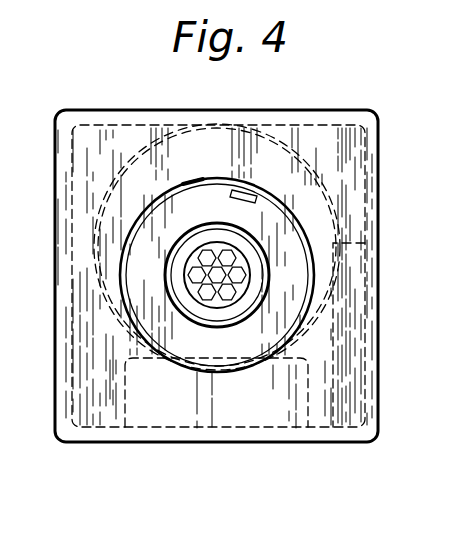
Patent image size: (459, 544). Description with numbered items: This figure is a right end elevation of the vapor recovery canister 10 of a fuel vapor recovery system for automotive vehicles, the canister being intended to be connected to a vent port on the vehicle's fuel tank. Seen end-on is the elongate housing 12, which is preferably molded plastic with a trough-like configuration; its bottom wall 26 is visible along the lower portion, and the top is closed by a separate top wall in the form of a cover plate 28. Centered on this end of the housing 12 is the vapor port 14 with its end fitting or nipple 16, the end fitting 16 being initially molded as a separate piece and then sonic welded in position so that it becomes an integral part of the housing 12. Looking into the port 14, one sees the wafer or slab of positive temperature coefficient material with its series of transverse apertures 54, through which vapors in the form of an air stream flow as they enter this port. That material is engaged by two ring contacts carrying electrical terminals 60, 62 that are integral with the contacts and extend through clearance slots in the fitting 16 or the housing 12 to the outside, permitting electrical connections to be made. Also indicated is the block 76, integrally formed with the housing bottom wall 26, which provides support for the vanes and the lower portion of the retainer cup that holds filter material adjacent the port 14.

The canister 10 is at (94, 88).
The housing 12 is at (63, 313).
The vapor port 14 is at (135, 196).
The end fitting 16 is at (232, 312).
The bottom wall 26 is at (327, 431).
The cover plate 28 is at (324, 120).
The transverse apertures 54 is at (200, 247).
The electrical terminal 60 is at (184, 183).
The electrical terminal 62 is at (253, 196).
The block 76 is at (162, 410).